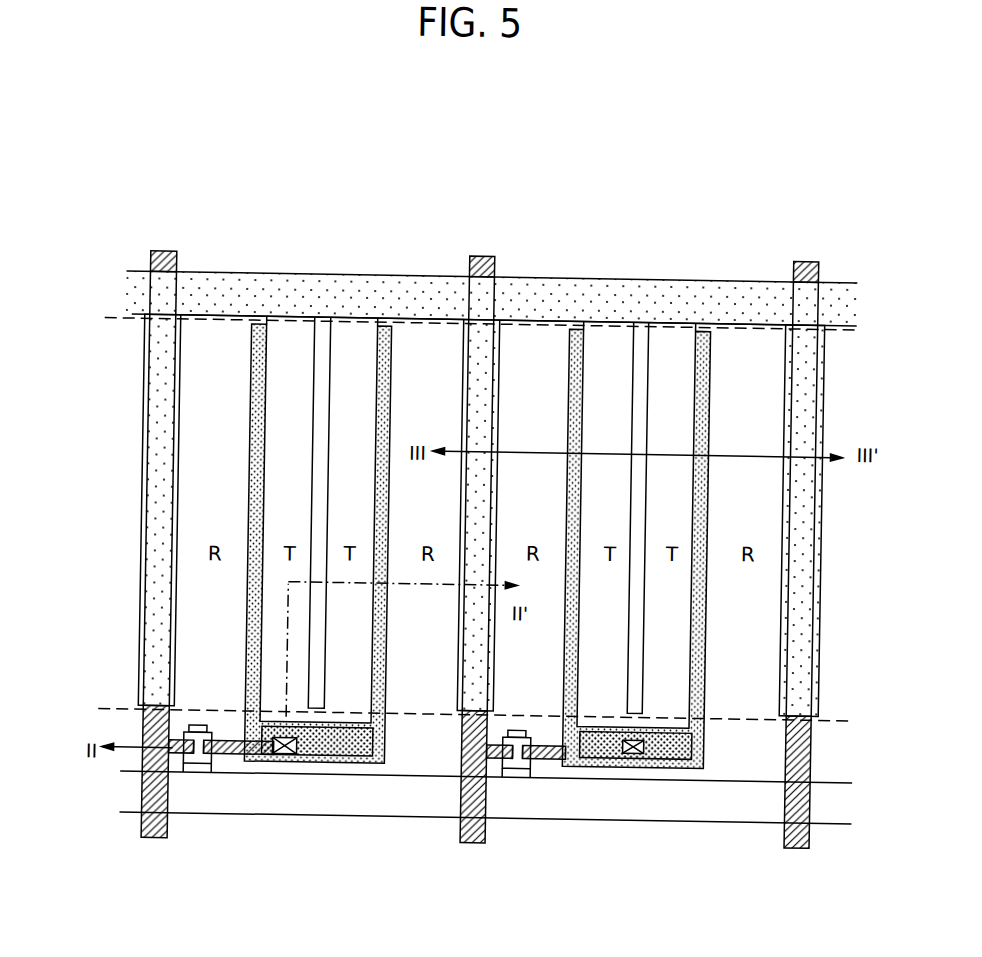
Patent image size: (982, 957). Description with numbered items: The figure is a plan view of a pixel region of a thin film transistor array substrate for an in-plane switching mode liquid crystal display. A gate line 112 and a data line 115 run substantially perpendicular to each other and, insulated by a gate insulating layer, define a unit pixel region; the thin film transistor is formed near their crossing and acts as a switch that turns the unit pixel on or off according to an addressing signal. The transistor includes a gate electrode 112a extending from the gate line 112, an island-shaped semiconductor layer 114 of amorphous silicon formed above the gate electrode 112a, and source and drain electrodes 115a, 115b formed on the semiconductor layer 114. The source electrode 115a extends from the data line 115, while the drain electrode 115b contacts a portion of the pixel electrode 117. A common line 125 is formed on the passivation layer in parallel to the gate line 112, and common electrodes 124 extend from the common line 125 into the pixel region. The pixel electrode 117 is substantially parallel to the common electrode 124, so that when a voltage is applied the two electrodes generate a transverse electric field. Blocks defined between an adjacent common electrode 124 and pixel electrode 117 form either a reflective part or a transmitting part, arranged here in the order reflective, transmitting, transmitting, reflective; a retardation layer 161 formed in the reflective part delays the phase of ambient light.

The gate line 112 is at (371, 797).
The gate electrode 112a is at (203, 733).
The semiconductor layer 114 is at (204, 770).
The data line 115 is at (146, 800).
The source electrode 115a is at (189, 775).
The drain electrode 115b is at (216, 763).
The pixel electrode 117 is at (252, 482).
The common electrode 124 is at (316, 435).
The common line 125 is at (204, 302).
The retardation layer 161 is at (513, 327).